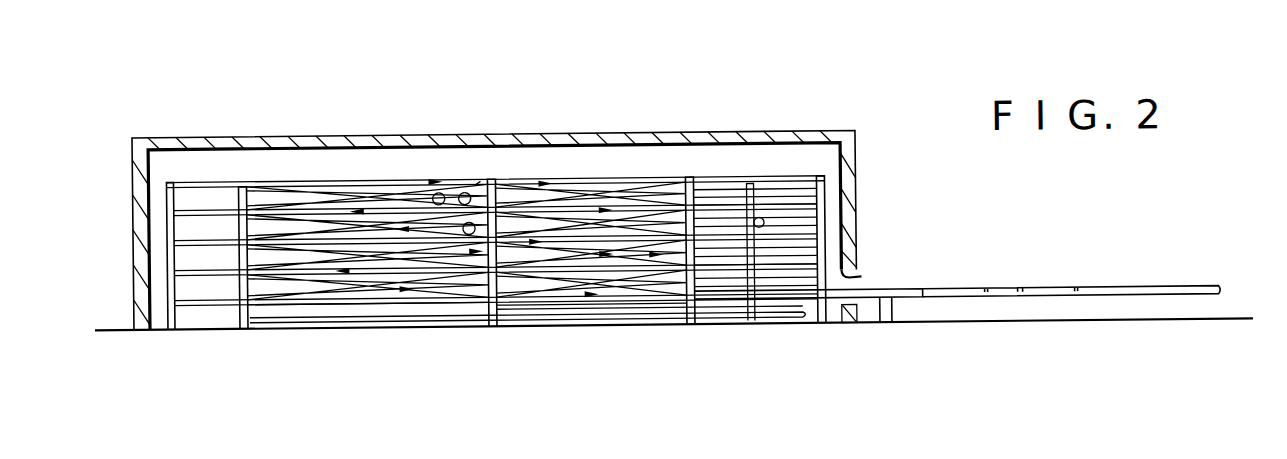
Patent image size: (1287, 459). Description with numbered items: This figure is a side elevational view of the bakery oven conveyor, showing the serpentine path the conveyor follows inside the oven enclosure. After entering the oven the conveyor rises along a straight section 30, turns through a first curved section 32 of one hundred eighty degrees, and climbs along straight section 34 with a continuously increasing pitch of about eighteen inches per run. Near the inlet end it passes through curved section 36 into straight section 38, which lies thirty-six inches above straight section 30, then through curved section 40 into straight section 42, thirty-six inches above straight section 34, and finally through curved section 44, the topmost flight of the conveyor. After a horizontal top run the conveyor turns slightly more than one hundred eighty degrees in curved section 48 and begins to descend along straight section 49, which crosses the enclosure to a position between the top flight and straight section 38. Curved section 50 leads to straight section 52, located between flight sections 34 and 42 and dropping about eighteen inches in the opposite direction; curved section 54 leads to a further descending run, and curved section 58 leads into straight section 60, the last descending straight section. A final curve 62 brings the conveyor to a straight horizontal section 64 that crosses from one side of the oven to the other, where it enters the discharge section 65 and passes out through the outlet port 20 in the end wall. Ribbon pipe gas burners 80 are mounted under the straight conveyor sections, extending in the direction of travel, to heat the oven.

The port 20 is at (907, 291).
The straight section 30 is at (453, 280).
The first curved section 32 is at (173, 275).
The straight section 34 is at (577, 252).
The curved section 36 is at (455, 246).
The straight section 38 is at (470, 217).
The curved section 40 is at (173, 216).
The straight section 42 is at (623, 188).
The curved section 44 is at (813, 184).
The curved section 48 is at (172, 183).
The straight section 49 is at (482, 184).
The curved section 50 is at (812, 214).
The straight section 52 is at (662, 213).
The curved section 54 is at (173, 245).
The curved section 58 is at (818, 275).
The straight section 60 is at (392, 298).
The curve 62 is at (173, 302).
The straight horizontal section 64 is at (652, 307).
The discharge section 65 is at (922, 295).
The ribbon pipe gas burners 80 is at (560, 314).